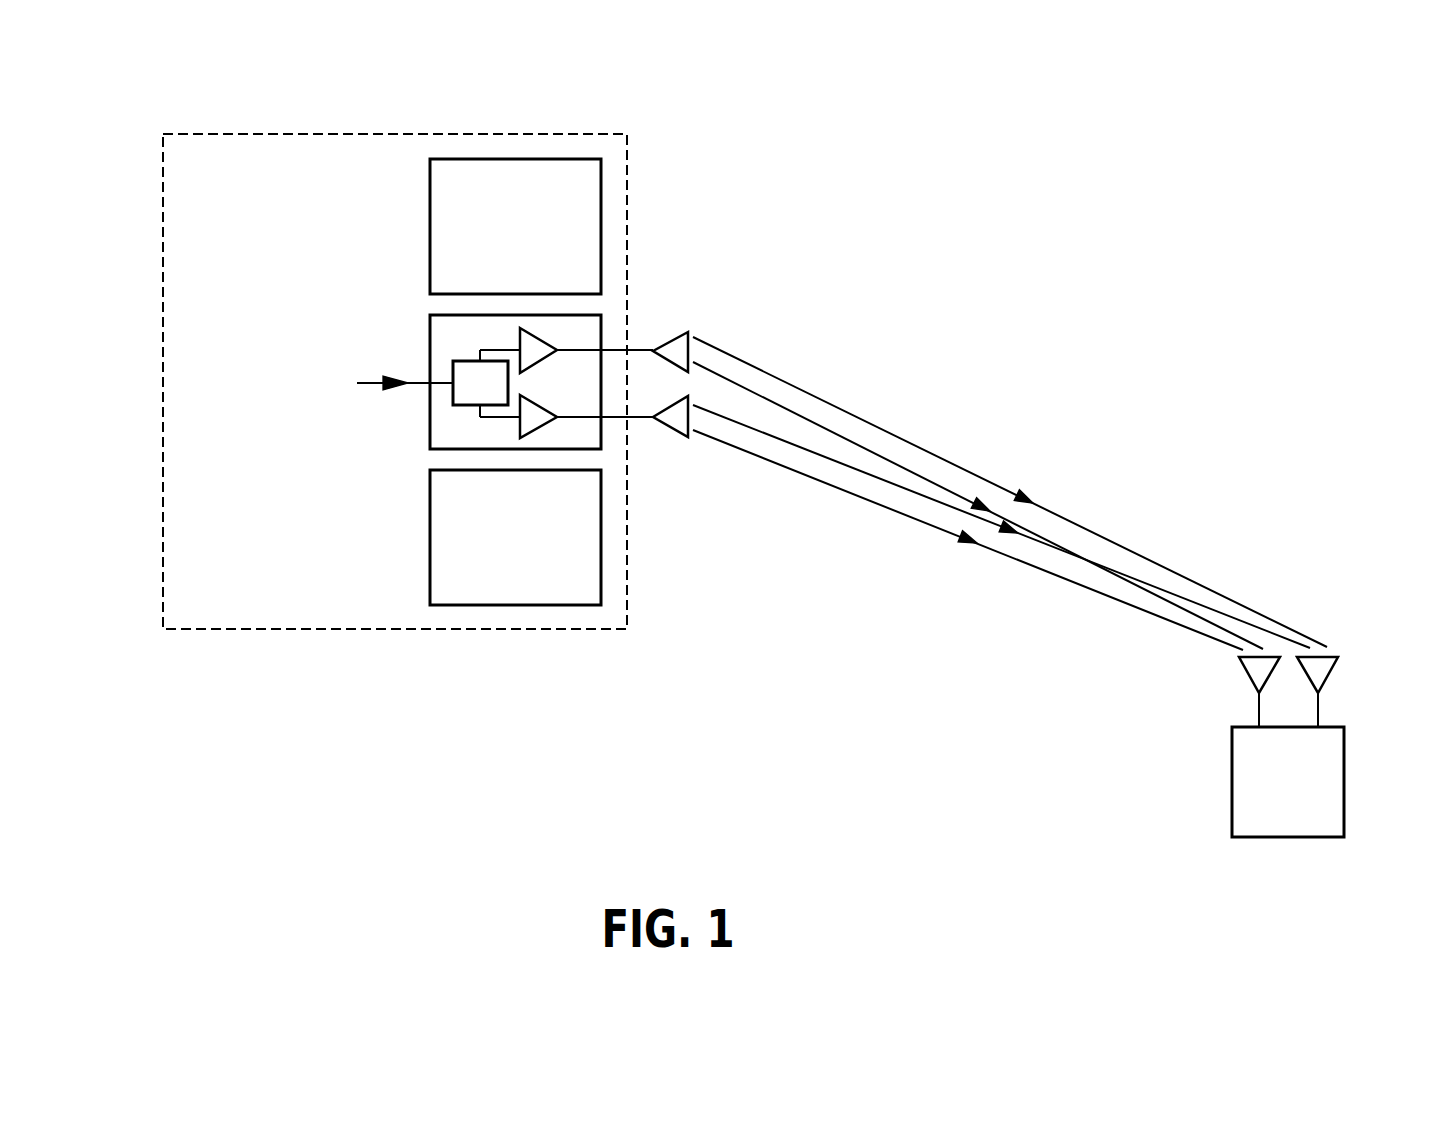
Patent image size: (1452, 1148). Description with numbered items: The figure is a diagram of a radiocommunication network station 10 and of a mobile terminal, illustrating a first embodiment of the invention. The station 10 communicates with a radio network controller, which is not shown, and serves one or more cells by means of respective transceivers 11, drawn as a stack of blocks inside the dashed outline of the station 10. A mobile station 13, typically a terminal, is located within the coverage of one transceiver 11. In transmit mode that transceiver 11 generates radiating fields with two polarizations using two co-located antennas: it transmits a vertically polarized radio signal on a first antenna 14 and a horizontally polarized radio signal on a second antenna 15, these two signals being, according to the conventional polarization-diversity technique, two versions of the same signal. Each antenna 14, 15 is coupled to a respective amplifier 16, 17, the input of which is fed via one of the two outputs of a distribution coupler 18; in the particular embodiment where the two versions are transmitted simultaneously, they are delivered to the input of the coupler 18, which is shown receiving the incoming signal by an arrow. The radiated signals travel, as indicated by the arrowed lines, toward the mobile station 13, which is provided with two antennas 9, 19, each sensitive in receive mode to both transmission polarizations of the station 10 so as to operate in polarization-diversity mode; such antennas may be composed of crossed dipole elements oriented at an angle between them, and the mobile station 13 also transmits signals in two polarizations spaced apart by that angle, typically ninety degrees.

The antenna 9 is at (1247, 670).
The station 10 is at (188, 631).
The transceiver 11 is at (560, 159).
The mobile station 13 is at (1292, 837).
The first antenna 14 is at (688, 332).
The second antenna 15 is at (688, 437).
The amplifier 16 is at (545, 335).
The amplifier 17 is at (543, 402).
The distribution coupler 18 is at (452, 405).
The antenna 19 is at (1332, 670).